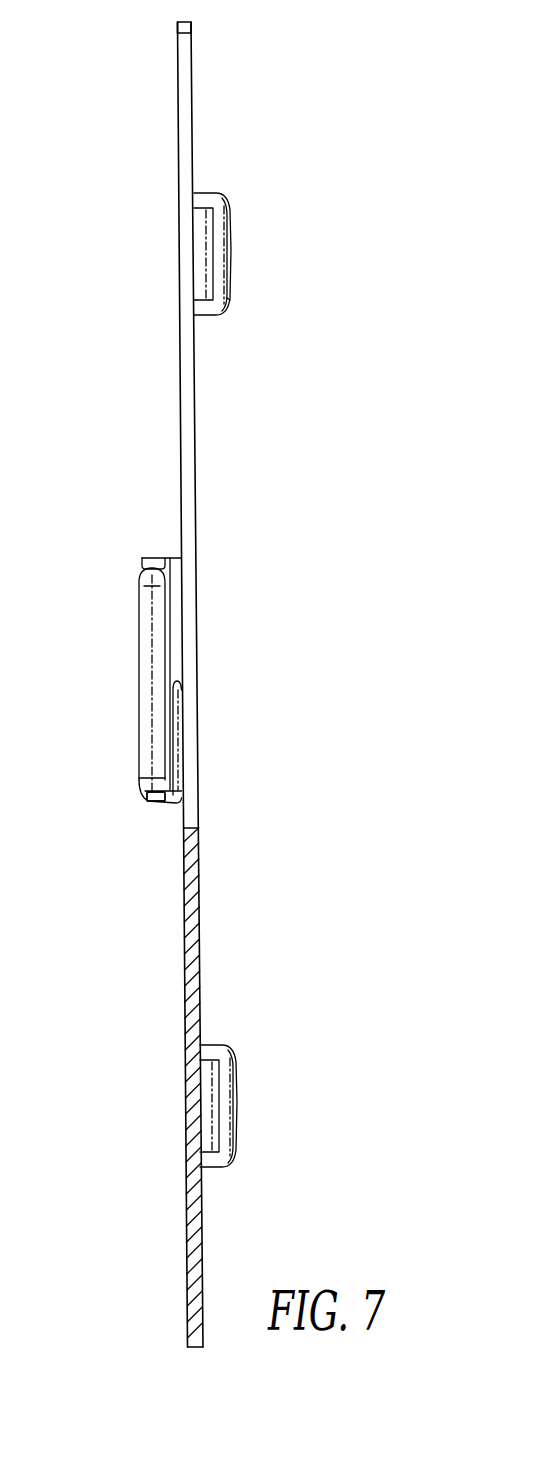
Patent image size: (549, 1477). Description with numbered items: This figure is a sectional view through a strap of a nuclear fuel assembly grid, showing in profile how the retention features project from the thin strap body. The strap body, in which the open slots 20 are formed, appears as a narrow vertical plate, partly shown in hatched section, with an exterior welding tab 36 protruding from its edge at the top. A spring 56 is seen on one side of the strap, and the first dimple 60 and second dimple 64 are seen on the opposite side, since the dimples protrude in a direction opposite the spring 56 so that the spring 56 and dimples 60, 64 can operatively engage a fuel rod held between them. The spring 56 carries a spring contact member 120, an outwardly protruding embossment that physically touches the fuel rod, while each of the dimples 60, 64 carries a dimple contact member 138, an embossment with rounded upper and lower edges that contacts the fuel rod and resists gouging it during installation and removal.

The open slot 20 is at (188, 472).
The exterior welding tab 36 is at (192, 24).
The spring 56 is at (155, 558).
The first dimple 60 is at (228, 197).
The second dimple 64 is at (232, 1048).
The spring contact member 120 is at (141, 788).
The dimple contact member 138 is at (228, 297).